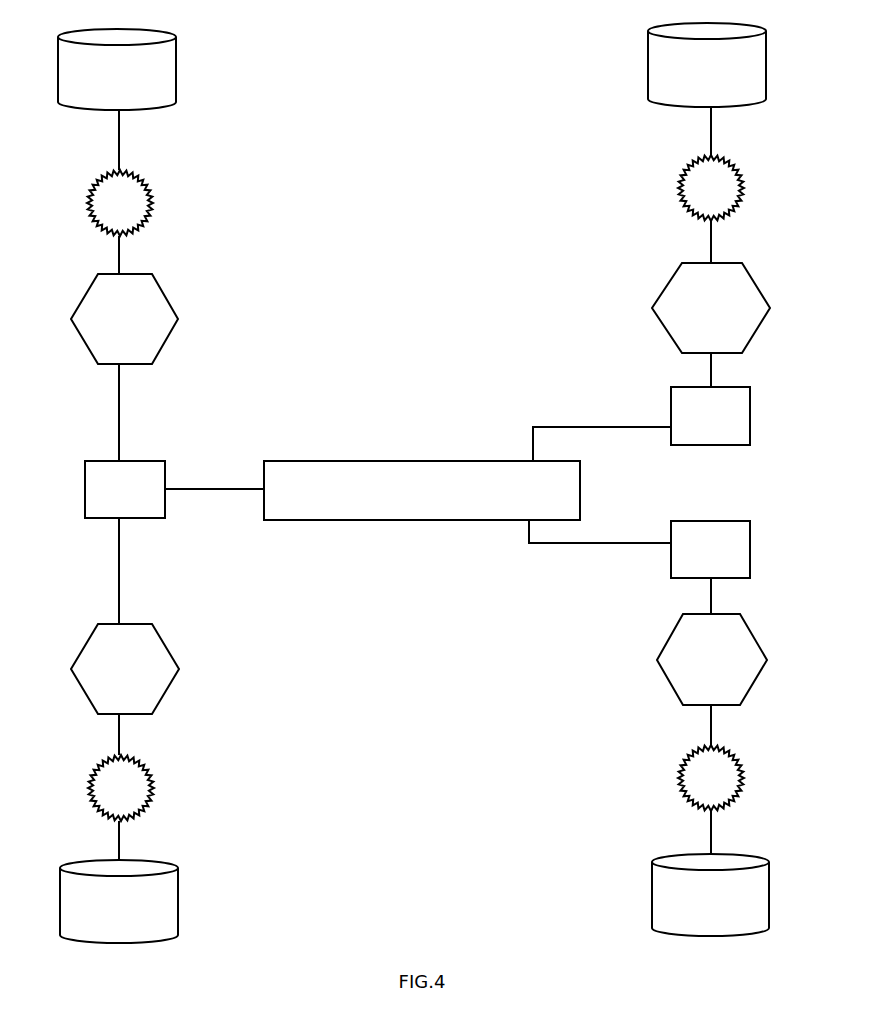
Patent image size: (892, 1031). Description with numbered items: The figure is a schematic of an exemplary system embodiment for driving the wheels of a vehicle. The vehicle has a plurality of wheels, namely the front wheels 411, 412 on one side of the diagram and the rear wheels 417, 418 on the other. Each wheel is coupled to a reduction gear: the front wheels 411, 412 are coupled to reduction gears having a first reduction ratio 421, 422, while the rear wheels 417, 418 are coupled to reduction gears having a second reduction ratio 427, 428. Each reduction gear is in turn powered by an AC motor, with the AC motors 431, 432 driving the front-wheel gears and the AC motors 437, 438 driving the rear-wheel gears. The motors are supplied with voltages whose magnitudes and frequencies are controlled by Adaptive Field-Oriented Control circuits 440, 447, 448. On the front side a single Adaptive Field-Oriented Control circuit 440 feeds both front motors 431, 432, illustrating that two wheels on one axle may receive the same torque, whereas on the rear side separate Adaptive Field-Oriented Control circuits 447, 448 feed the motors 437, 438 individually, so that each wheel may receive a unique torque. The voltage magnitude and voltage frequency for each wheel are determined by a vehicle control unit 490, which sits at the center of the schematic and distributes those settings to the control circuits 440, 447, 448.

The front wheel 411 is at (117, 69).
The front wheel 412 is at (119, 901).
The rear wheel 417 is at (707, 65).
The rear wheel 418 is at (710, 895).
The reduction gear with first reduction ratio 421 is at (120, 203).
The reduction gear with first reduction ratio 422 is at (121, 788).
The reduction gear with second reduction ratio 427 is at (711, 188).
The reduction gear with second reduction ratio 428 is at (711, 778).
The AC motor 431 is at (124, 319).
The AC motor 432 is at (125, 669).
The AC motor 437 is at (711, 308).
The AC motor 438 is at (712, 659).
The Adaptive Field-Oriented Control circuit 440 is at (125, 489).
The Adaptive Field-Oriented Control circuit 447 is at (710, 416).
The Adaptive Field-Oriented Control circuit 448 is at (710, 549).
The vehicle control unit 490 is at (422, 490).